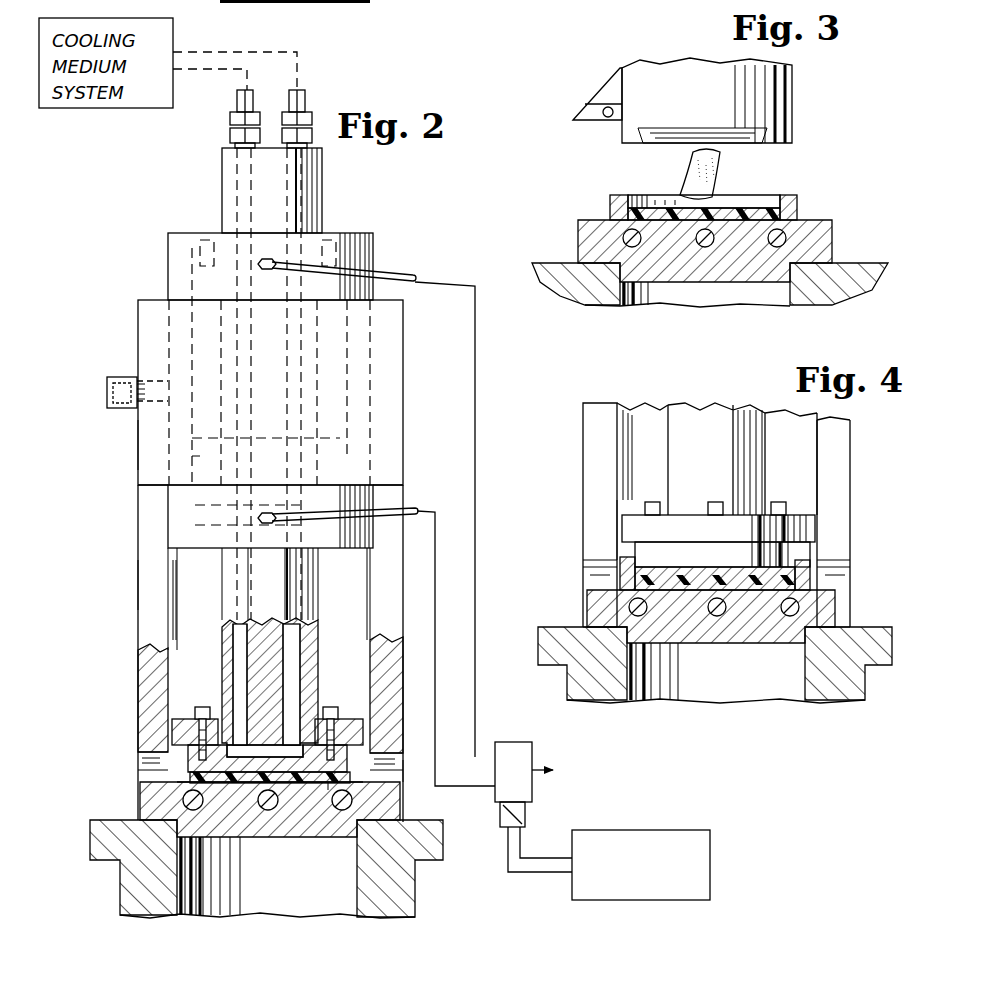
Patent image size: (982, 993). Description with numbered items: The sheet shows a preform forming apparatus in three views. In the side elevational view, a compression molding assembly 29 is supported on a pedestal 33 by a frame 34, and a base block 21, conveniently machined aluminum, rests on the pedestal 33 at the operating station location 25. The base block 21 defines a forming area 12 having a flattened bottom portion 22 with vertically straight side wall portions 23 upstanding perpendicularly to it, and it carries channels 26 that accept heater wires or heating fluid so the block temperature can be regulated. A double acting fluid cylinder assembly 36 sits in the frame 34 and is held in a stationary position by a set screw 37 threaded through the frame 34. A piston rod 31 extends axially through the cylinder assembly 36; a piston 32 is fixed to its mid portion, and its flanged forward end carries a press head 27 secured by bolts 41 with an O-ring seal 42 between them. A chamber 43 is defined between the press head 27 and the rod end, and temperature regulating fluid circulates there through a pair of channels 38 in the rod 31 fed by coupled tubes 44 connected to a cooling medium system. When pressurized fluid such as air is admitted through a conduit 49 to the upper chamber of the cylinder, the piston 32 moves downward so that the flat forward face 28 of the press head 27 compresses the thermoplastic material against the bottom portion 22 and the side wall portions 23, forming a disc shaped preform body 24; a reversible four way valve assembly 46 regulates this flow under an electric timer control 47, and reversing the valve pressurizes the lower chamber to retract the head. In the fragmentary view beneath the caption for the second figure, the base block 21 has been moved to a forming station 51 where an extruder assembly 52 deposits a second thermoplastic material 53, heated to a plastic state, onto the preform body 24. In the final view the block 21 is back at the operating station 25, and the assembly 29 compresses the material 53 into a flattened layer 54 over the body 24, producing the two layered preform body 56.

In FIG. 3, the forming area 12 is at (765, 196).
In FIG. 2, the base block 21 is at (383, 793).
In FIG. 3, the base block 21 is at (585, 236).
In FIG. 4, the base block 21 is at (785, 633).
In FIG. 2, the flattened bottom portion 22 is at (185, 787).
In FIG. 2, the side wall portions 23 is at (355, 773).
In FIG. 4, the side wall portions 23 is at (625, 572).
In FIG. 2, the preform body 24 is at (190, 775).
In FIG. 3, the preform body 24 is at (782, 215).
In FIG. 2, the operating station location 25 is at (406, 770).
In FIG. 4, the operating station location 25 is at (854, 615).
In FIG. 2, the channels 26 is at (197, 806).
In FIG. 3, the channels 26 is at (705, 247).
In FIG. 2, the press head 27 is at (200, 745).
In FIG. 4, the press head 27 is at (652, 552).
In FIG. 2, the flat forward face 28 is at (330, 790).
In FIG. 2, the compression molding assembly 29 is at (136, 633).
In FIG. 4, the compression molding assembly 29 is at (576, 617).
In FIG. 2, the piston rod 31 is at (223, 590).
In FIG. 2, the piston 32 is at (190, 460).
In FIG. 2, the pedestal 33 is at (120, 880).
In FIG. 2, the frame 34 is at (143, 583).
In FIG. 2, the double acting fluid cylinder assembly 36 is at (146, 443).
In FIG. 2, the set screw 37 is at (114, 377).
In FIG. 2, the channels 38 is at (243, 662).
In FIG. 2, the bolts 41 is at (202, 707).
In FIG. 2, the O-ring seal 42 is at (283, 681).
In FIG. 2, the chamber 43 is at (280, 758).
In FIG. 2, the coupled tubes 44 is at (300, 90).
In FIG. 2, the reversible four way valve assembly 46 is at (200, 255).
In FIG. 2, the electric timer control 47 is at (195, 517).
In FIG. 2, the conduit 49 is at (380, 270).
In FIG. 3, the forming station 51 is at (840, 259).
In FIG. 3, the extruder assembly 52 is at (796, 92).
In FIG. 3, the thermoplastic material 53 is at (722, 168).
In FIG. 4, the flattened layer 54 is at (792, 567).
In FIG. 4, the preform body 56 is at (792, 585).